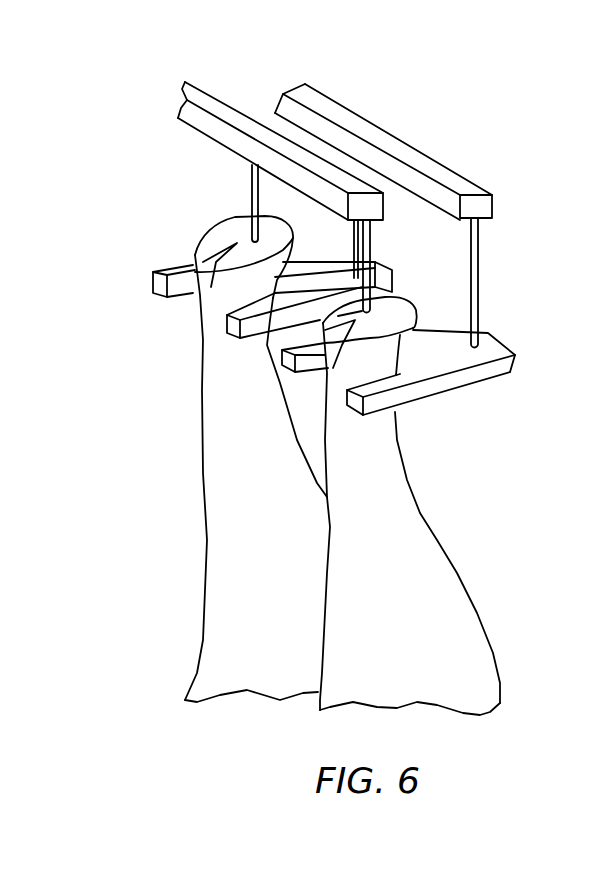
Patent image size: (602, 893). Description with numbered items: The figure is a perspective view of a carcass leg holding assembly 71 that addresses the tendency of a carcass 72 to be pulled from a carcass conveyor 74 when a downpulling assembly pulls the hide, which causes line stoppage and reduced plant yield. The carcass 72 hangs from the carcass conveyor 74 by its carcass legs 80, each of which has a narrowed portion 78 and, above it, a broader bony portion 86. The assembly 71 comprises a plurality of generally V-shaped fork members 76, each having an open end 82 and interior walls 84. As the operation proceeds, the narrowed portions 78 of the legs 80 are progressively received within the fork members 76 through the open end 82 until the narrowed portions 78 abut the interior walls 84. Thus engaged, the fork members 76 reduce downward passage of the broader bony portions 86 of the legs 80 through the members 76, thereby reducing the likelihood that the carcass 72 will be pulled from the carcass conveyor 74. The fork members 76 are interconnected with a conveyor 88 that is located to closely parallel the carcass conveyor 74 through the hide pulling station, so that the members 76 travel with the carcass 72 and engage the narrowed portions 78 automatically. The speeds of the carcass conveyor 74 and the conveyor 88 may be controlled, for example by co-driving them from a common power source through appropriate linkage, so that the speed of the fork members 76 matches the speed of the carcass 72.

The carcass leg holding assembly 71 is at (505, 520).
The carcass 72 is at (158, 585).
The carcass conveyor 74 is at (205, 95).
The fork member 76 is at (452, 380).
The narrowed portion 78 is at (205, 330).
The carcass leg 80 is at (219, 529).
The open end 82 is at (322, 380).
The interior wall 84 is at (307, 363).
The broader bony portion 86 is at (413, 328).
The conveyor 88 is at (440, 172).